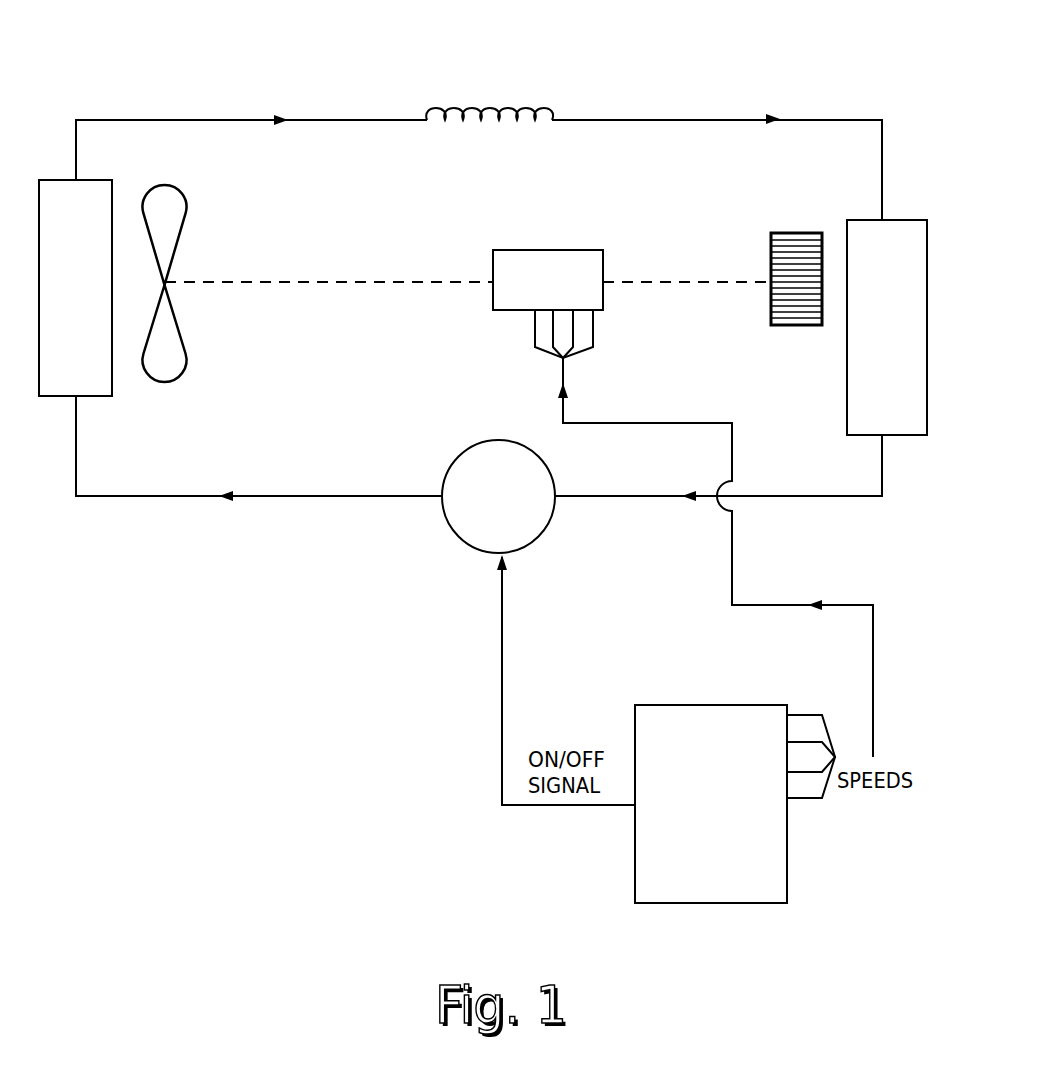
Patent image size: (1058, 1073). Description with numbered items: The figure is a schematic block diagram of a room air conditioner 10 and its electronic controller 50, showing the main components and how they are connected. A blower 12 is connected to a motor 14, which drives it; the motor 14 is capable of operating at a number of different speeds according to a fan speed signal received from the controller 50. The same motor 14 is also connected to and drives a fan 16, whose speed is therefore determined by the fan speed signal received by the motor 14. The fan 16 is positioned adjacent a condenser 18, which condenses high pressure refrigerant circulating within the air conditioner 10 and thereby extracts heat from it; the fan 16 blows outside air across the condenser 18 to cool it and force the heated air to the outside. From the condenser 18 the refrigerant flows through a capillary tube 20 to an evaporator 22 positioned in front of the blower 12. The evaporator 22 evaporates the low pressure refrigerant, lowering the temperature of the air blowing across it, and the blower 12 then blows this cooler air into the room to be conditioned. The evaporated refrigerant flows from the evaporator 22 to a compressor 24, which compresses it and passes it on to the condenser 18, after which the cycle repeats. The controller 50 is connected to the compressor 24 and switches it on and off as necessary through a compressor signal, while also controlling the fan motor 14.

The room air conditioner 10 is at (742, 90).
The blower 12 is at (793, 233).
The motor 14 is at (537, 248).
The fan 16 is at (170, 203).
The condenser 18 is at (75, 288).
The capillary tube 20 is at (498, 110).
The evaporator 22 is at (887, 327).
The compressor 24 is at (498, 496).
The electronic controller 50 is at (735, 799).